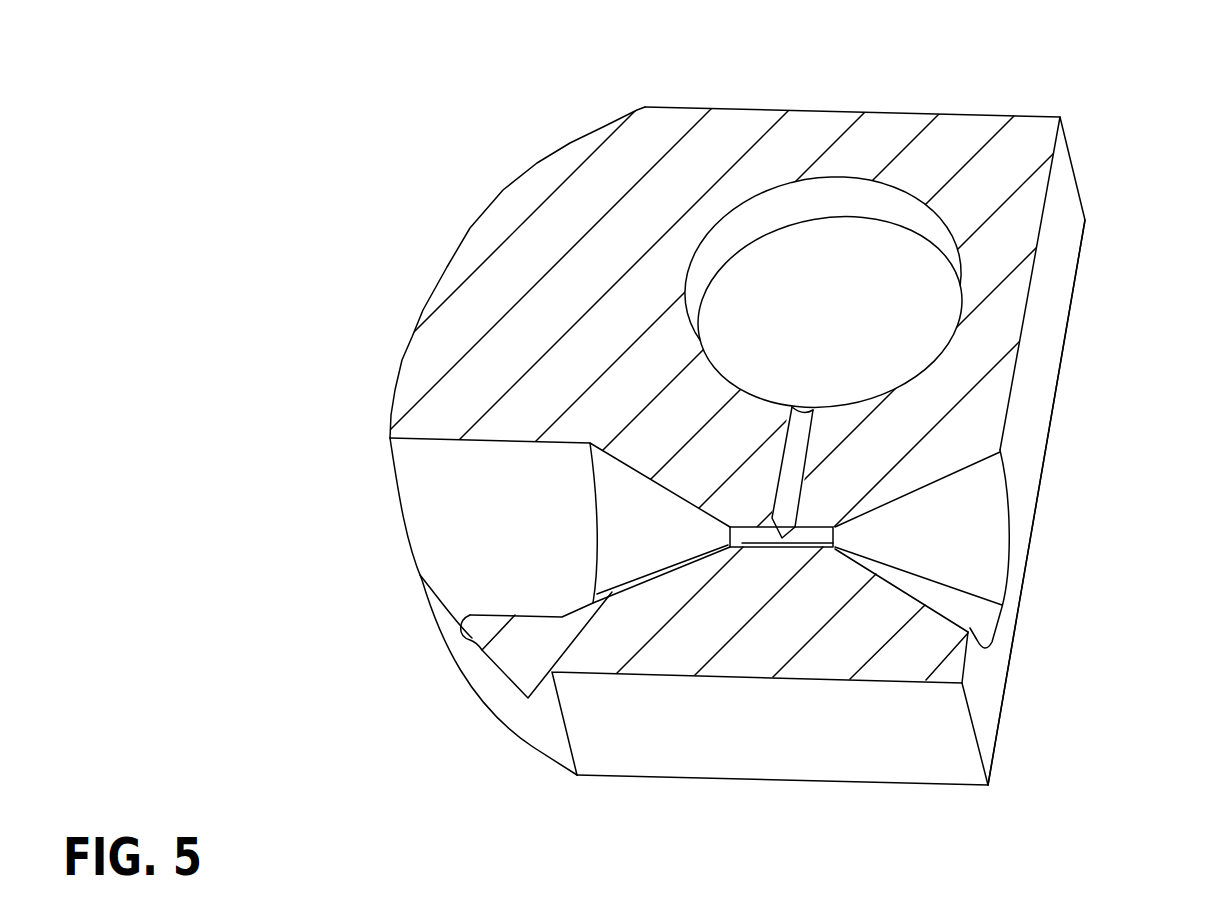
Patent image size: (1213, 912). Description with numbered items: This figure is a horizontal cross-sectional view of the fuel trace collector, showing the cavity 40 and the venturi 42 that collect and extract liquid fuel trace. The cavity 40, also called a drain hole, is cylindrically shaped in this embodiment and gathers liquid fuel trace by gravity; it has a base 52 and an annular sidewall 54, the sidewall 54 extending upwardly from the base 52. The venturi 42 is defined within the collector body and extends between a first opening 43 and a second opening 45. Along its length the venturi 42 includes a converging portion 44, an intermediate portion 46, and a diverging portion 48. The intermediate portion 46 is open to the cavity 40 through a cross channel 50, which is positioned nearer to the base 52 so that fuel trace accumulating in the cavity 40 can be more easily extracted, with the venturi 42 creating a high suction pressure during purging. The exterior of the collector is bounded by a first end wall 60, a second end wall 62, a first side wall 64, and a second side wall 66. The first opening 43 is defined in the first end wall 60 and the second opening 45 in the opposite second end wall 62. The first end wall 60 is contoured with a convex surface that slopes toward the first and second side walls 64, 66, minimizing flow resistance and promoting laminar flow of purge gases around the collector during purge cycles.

The cavity 40 is at (884, 257).
The venturi 42 is at (678, 569).
The first opening 43 is at (400, 490).
The converging portion 44 is at (630, 580).
The second opening 45 is at (1008, 512).
The intermediate portion 46 is at (760, 548).
The diverging portion 48 is at (882, 578).
The cross channel 50 is at (816, 449).
The base 52 is at (805, 332).
The annular sidewall 54 is at (758, 218).
The first end wall 60 is at (473, 663).
The second end wall 62 is at (1050, 315).
The first side wall 64 is at (763, 753).
The second side wall 66 is at (728, 107).